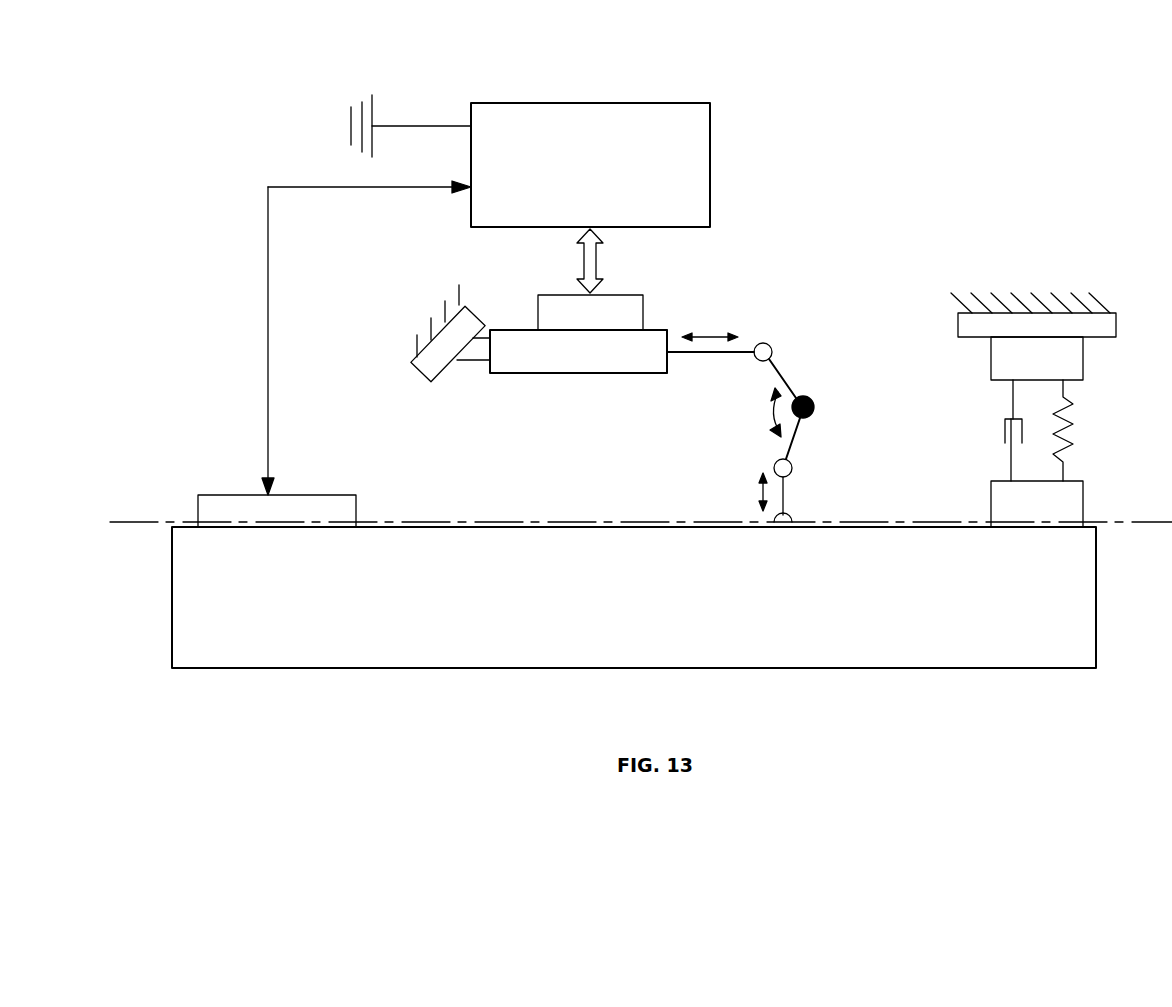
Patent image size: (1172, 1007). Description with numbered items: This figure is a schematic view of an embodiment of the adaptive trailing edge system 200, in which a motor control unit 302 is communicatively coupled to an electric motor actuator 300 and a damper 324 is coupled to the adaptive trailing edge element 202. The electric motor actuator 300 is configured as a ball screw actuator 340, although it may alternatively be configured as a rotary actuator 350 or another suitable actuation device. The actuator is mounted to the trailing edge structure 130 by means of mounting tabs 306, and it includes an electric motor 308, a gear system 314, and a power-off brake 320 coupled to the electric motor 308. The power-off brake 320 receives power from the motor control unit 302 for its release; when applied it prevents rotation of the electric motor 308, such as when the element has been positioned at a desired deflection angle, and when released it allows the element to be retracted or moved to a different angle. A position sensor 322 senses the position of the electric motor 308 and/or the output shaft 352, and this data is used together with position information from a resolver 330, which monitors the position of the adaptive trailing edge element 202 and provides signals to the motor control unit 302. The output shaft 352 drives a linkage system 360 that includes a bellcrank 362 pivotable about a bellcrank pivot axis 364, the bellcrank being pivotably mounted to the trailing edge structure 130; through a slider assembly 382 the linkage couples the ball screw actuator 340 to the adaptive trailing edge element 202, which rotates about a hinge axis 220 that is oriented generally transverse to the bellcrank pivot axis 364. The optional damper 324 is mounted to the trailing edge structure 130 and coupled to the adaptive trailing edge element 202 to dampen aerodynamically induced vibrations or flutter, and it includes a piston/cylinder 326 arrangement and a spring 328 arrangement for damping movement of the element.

The adaptive trailing edge system 200 is at (918, 72).
The motor control unit 302 is at (486, 295).
The electric motor 308 is at (623, 307).
The electric motor actuator 300 is at (548, 292).
The power-off brake 320 is at (545, 375).
The gear system 314 is at (507, 368).
The position sensor 322 is at (598, 375).
The ball screw actuator 340 is at (640, 375).
The rotary actuator 350 is at (655, 377).
The trailing edge structure 130 is at (422, 322).
The mounting tabs 306 is at (485, 330).
The output shaft 352 is at (710, 355).
The bellcrank 362 is at (783, 372).
The bellcrank pivot axis 364 is at (807, 402).
The linkage system 360 is at (795, 443).
The slider assembly 382 is at (785, 493).
The damper 324 is at (1131, 394).
The piston/cylinder arrangement 326 is at (1003, 426).
The spring arrangement 328 is at (1070, 438).
The hinge axis 220 is at (1138, 530).
The resolver 330 is at (277, 511).
The adaptive trailing edge element 202 is at (634, 597).